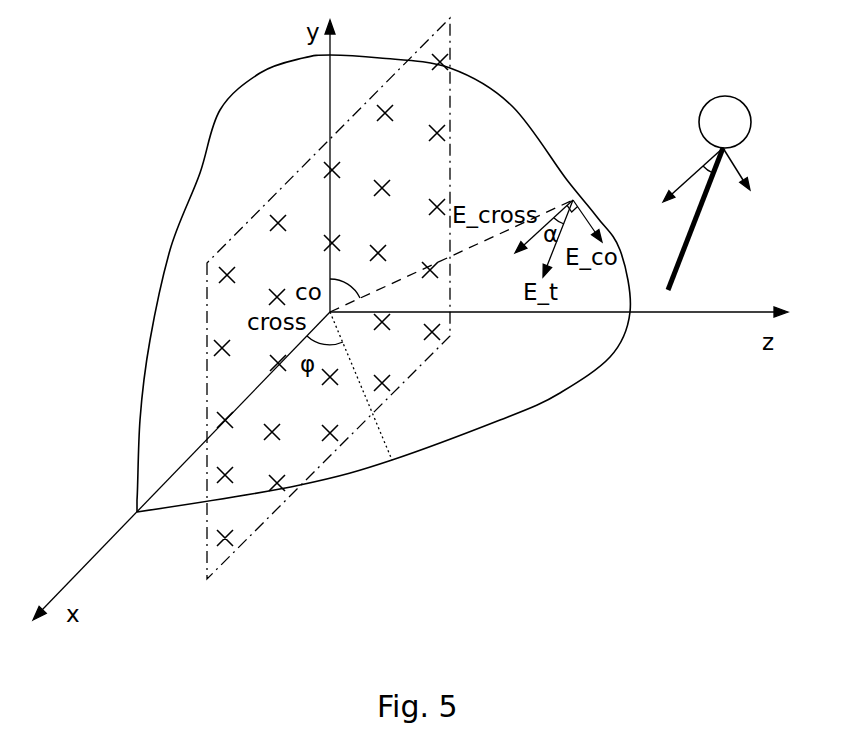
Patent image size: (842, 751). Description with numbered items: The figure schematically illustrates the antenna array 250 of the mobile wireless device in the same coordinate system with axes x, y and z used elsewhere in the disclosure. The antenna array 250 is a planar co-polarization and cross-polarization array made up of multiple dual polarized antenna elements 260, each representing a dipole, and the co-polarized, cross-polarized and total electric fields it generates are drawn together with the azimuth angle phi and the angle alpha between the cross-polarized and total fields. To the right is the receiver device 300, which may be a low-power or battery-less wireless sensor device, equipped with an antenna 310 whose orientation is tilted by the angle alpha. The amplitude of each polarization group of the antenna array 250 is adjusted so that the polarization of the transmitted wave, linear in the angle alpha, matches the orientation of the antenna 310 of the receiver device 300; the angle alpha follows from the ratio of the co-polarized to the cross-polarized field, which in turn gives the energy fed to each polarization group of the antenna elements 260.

The antenna array 250 is at (265, 527).
The antenna element 260 is at (323, 447).
The receiver device 300 is at (732, 98).
The antenna 310 is at (685, 240).